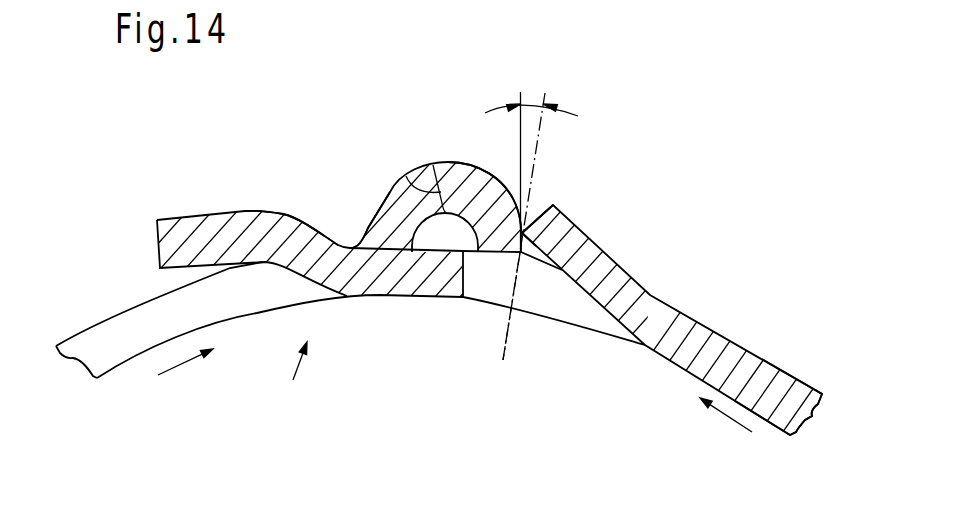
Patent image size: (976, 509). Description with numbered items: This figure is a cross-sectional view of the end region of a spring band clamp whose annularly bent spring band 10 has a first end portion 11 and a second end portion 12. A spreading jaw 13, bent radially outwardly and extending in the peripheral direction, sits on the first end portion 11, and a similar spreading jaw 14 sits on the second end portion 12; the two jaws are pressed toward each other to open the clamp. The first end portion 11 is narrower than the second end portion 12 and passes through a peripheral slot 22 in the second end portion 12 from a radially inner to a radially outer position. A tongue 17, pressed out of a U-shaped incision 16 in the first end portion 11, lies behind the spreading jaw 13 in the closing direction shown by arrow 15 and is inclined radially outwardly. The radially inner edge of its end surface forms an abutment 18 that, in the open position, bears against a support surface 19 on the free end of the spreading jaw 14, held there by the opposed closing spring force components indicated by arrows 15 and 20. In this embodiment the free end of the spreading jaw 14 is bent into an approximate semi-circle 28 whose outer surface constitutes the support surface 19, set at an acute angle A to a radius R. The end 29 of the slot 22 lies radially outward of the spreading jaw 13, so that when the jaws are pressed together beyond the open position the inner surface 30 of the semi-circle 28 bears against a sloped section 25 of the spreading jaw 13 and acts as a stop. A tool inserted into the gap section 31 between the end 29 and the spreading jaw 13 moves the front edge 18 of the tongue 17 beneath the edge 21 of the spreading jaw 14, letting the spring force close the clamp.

The spring band 10 is at (294, 378).
The first end portion 11 is at (803, 372).
The second end portion 12 is at (63, 332).
The spreading jaw 13 is at (177, 232).
The spreading jaw 14 is at (485, 176).
The arrow indicating closing direction 15 is at (732, 434).
The U-shaped incision 16 is at (570, 305).
The tongue 17 is at (603, 272).
The abutment 18 is at (525, 233).
The support surface 19 is at (523, 232).
The arrow indicating closing spring force direction 20 is at (185, 380).
The edge of spreading jaw 21 is at (520, 253).
The peripheral slot 22 is at (110, 332).
The sloped section 25 is at (306, 218).
The semi-circle 28 is at (452, 172).
The end of slot 29 is at (409, 172).
The inner surface 30 is at (450, 253).
The gap section 31 is at (382, 227).